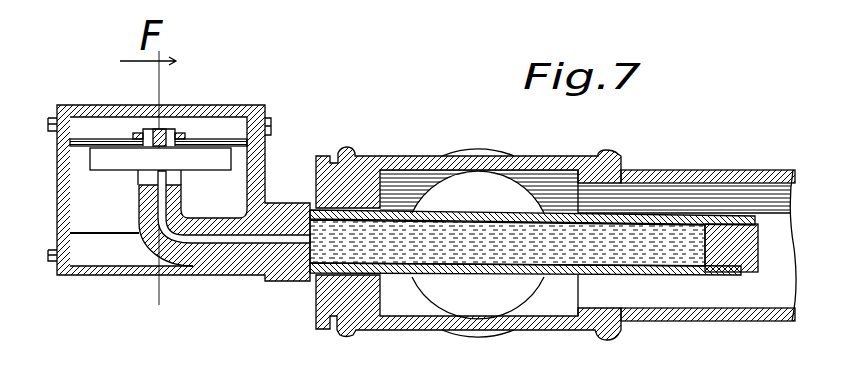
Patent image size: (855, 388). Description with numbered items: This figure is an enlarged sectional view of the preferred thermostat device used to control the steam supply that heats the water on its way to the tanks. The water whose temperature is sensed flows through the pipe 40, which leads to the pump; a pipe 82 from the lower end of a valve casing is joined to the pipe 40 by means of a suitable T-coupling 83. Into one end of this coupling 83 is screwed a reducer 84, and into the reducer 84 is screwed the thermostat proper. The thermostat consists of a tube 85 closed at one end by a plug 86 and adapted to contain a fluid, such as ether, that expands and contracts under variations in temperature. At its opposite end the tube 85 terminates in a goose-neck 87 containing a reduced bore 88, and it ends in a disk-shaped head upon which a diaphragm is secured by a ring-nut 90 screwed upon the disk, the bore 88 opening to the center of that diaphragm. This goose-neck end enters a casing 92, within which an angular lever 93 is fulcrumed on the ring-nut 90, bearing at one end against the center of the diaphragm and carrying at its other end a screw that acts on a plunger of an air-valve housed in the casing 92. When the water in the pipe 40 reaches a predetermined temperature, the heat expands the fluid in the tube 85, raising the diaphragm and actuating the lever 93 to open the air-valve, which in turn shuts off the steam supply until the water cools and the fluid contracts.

The pipe 40 is at (705, 313).
The pipe 82 is at (478, 243).
The T-coupling 83 is at (550, 320).
The reducer 84 is at (322, 185).
The tube 85 is at (613, 216).
The plug 86 is at (735, 215).
The goose-neck 87 is at (205, 250).
The reduced bore 88 is at (150, 202).
The ring-nut 90 is at (113, 163).
The casing 92 is at (217, 100).
The angular lever 93 is at (150, 121).